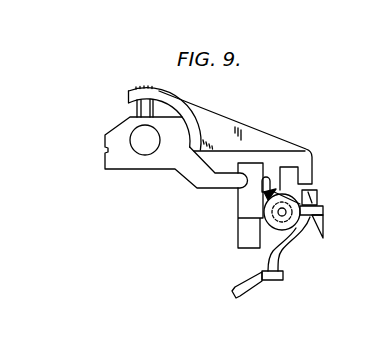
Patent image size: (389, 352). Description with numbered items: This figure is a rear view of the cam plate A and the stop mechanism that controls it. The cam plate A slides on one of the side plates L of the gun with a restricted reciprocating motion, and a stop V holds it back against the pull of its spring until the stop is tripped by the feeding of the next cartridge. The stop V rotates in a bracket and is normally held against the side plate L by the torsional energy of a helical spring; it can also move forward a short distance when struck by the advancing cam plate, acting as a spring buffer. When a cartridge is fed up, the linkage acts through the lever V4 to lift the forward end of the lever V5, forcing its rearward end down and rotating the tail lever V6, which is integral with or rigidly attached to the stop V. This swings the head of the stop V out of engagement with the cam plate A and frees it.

The cam plate A is at (219, 128).
The side plate L is at (252, 230).
The stop V is at (304, 222).
The lever V4 is at (238, 288).
The lever V5 is at (270, 194).
The tail lever V6 is at (318, 211).